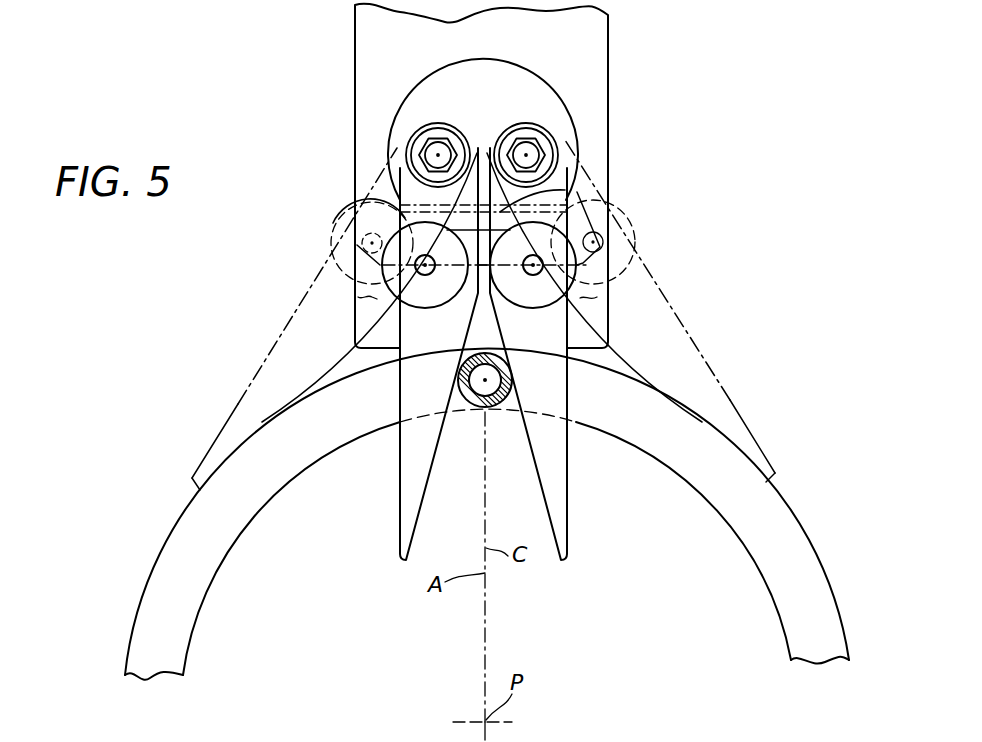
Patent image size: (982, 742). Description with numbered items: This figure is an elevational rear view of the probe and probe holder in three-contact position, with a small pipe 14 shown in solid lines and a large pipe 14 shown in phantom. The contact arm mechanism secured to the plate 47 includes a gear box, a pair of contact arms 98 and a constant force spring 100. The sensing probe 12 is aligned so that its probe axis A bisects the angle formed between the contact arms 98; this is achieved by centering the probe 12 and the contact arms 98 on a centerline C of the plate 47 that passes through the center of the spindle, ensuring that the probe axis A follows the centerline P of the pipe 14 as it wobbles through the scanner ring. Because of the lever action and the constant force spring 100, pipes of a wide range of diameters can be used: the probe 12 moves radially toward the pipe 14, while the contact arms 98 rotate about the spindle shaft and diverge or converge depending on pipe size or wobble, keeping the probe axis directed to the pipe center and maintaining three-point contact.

The sensing probe 12 is at (616, 303).
The pipe 14 is at (805, 527).
The plate 47 is at (603, 30).
The contact arms 98 is at (708, 372).
The constant force spring 100 is at (515, 210).